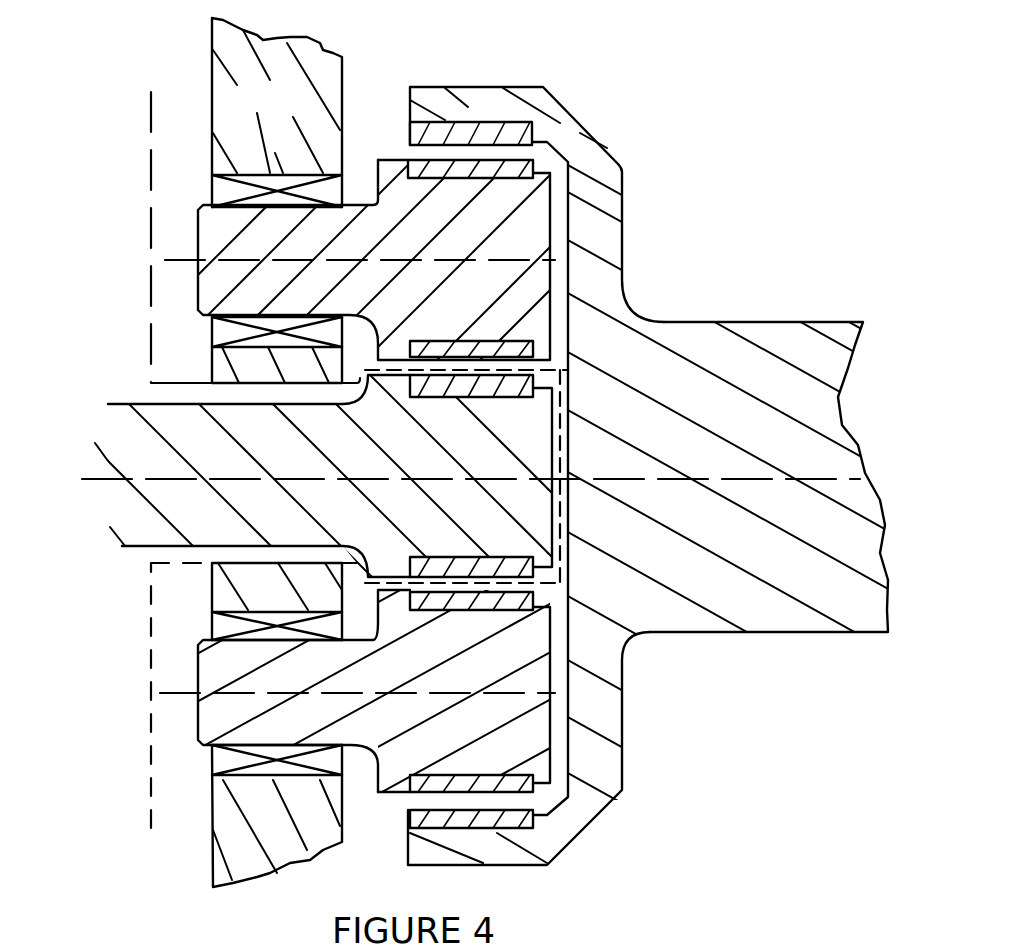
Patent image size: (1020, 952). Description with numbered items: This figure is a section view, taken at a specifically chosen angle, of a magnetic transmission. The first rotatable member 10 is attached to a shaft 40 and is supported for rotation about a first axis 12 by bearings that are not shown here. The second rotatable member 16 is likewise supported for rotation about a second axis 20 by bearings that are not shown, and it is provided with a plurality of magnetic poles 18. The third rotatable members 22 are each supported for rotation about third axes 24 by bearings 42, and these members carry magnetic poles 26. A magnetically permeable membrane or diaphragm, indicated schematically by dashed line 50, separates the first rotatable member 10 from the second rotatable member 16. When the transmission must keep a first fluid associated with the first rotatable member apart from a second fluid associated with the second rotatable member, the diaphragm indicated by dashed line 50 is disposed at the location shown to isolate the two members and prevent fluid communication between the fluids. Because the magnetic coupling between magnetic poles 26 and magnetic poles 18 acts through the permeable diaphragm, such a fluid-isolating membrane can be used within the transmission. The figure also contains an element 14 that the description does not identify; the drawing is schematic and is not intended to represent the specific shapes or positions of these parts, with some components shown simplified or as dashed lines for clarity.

The first rotatable member 10 is at (610, 227).
The first axis 12 is at (783, 479).
The bearing 14 is at (475, 130).
The second rotatable member 16 is at (465, 521).
The magnetic poles 18 is at (570, 370).
The second axis 20 is at (113, 478).
The third rotatable members 22 is at (475, 313).
The third axes 24 is at (223, 260).
The magnetic poles 26 is at (548, 142).
The shaft 40 is at (737, 327).
The bearings 42 is at (147, 860).
The magnetically permeable diaphragm 50 is at (148, 122).